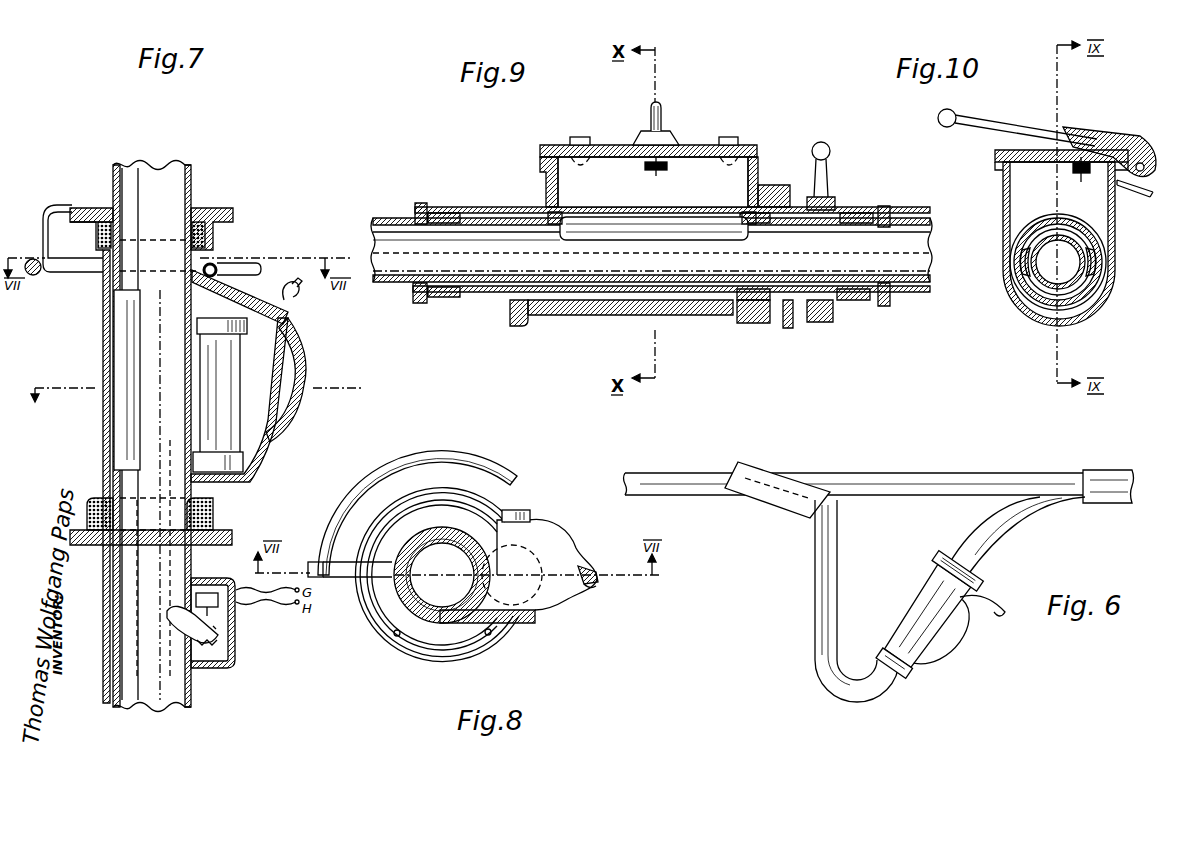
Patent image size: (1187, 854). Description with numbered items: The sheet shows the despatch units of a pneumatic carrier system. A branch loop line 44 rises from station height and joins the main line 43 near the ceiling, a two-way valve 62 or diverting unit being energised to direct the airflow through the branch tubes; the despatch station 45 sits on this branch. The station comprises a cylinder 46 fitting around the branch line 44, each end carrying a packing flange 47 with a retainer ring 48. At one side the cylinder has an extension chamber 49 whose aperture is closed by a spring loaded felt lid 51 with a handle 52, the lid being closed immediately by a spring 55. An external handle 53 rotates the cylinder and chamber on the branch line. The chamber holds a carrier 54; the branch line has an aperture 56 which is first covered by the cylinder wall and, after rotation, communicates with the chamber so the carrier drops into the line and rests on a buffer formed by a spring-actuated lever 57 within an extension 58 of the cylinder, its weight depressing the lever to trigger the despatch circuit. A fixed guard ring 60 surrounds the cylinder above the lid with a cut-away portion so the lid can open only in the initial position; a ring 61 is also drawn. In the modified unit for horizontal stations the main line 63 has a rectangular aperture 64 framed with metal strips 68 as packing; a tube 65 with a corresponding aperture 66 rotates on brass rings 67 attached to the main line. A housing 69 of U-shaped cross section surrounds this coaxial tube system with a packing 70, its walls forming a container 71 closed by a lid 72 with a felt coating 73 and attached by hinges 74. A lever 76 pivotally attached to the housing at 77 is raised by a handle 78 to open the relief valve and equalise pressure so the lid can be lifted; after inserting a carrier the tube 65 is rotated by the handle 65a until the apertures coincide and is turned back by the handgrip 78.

In FIG. 6, the main line 43 is at (890, 482).
In FIG. 7, the branch loop line 44 is at (191, 180).
In FIG. 6, the branch loop line 44 is at (837, 560).
In FIG. 6, the despatch station 45 is at (942, 670).
In FIG. 7, the cylinder 46 is at (108, 312).
In FIG. 8, the cylinder 46 is at (543, 616).
In FIG. 7, the packing flange 47 is at (214, 248).
In FIG. 7, the retainer ring 48 is at (233, 212).
In FIG. 7, the extension chamber 49 is at (252, 350).
In FIG. 7, the spring loaded felt lid 51 is at (277, 323).
In FIG. 8, the spring loaded felt lid 51 is at (553, 543).
In FIG. 7, the handle 52 is at (300, 285).
In FIG. 7, the external handle 53 is at (298, 368).
In FIG. 8, the external handle 53 is at (590, 588).
In FIG. 7, the carrier 54 is at (228, 466).
In FIG. 7, the spring 55 is at (250, 288).
In FIG. 7, the aperture 56 is at (128, 346).
In FIG. 7, the spring-actuated lever 57 is at (216, 627).
In FIG. 7, the extension 58 is at (218, 662).
In FIG. 7, the fixed guard ring 60 is at (97, 270).
In FIG. 8, the fixed guard ring 60 is at (477, 463).
In FIG. 8, the ring 61 is at (532, 500).
In FIG. 6, the two-way valve 62 is at (752, 476).
In FIG. 9, the main line 63 is at (388, 218).
In FIG. 10, the main line 63 is at (1020, 303).
In FIG. 9, the rectangular aperture 64 is at (690, 240).
In FIG. 10, the rectangular aperture 64 is at (1040, 228).
In FIG. 9, the tube 65 is at (490, 207).
In FIG. 10, the tube 65 is at (1093, 303).
In FIG. 9, the handle 65a is at (828, 148).
In FIG. 9, the aperture 66 is at (605, 302).
In FIG. 9, the brass rings 67 is at (440, 210).
In FIG. 9, the metal strips 68 is at (560, 213).
In FIG. 10, the metal strips 68 is at (1022, 256).
In FIG. 9, the housing 69 is at (762, 182).
In FIG. 10, the housing 69 is at (1117, 226).
In FIG. 9, the packing 70 is at (508, 318).
In FIG. 9, the container 71 is at (690, 175).
In FIG. 9, the lid 72 is at (604, 145).
In FIG. 9, the felt coating 73 is at (556, 147).
In FIG. 9, the hinges 74 is at (580, 137).
In FIG. 9, the lever 76 is at (668, 135).
In FIG. 10, the lever 76 is at (1115, 130).
In FIG. 10, the pivot 77 is at (1140, 183).
In FIG. 10, the handle 78 is at (952, 110).